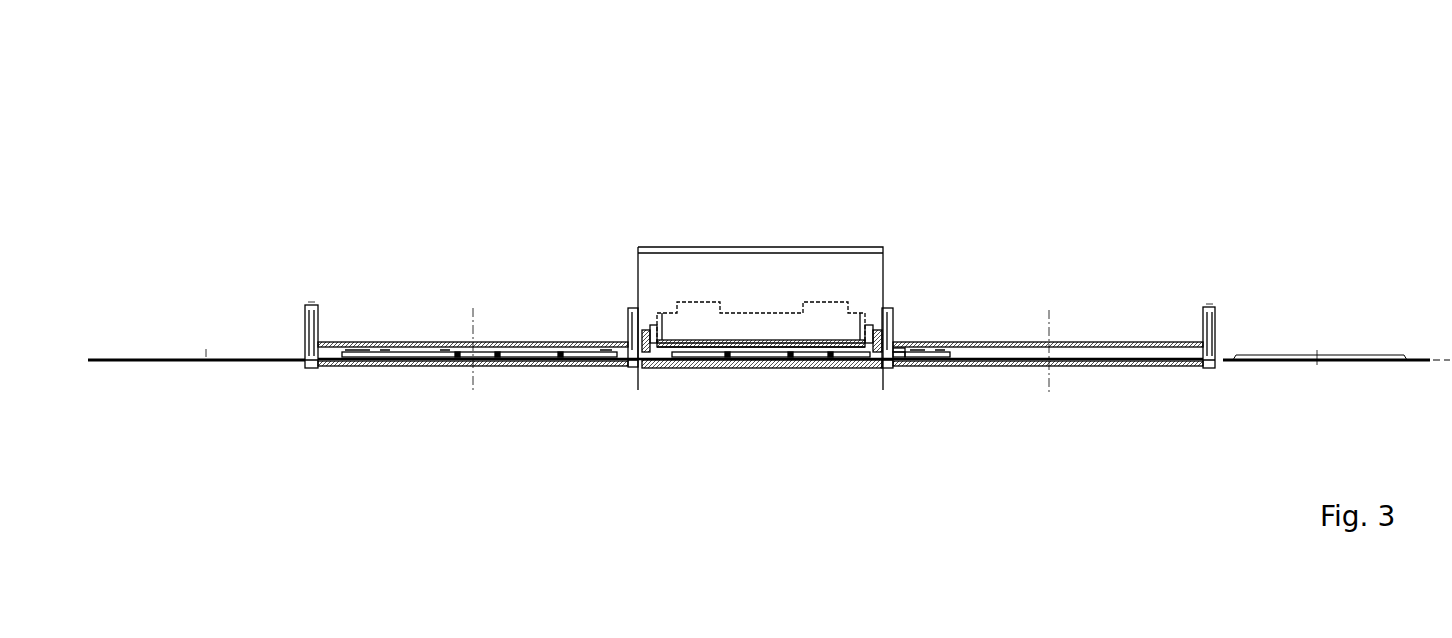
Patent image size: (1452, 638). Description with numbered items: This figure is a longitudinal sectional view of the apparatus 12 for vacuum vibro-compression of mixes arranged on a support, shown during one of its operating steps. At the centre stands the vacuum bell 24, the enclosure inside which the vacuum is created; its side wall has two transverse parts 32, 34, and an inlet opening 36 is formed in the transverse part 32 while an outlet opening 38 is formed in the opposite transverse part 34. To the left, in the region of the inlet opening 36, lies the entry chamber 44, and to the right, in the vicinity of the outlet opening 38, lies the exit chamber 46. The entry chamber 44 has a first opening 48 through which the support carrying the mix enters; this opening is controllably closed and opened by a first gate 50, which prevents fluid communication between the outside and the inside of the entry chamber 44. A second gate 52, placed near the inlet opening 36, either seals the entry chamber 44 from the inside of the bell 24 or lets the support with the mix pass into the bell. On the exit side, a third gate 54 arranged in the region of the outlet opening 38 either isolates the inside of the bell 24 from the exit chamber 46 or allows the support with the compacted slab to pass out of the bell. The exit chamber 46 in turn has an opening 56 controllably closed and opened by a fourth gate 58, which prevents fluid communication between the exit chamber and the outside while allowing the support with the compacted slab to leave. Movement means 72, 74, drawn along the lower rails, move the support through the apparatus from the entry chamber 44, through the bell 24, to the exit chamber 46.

The apparatus 12 is at (823, 216).
The vacuum bell 24 is at (885, 343).
The transverse part of the side wall 32 is at (639, 335).
The transverse part of the side wall 34 is at (897, 350).
The inlet opening 36 is at (653, 354).
The outlet opening 38 is at (899, 353).
The entry chamber 44 is at (433, 332).
The exit chamber 46 is at (1068, 330).
The first opening 48 is at (296, 357).
The first gate 50 is at (320, 308).
The second gate 52 is at (628, 308).
The third gate 54 is at (888, 306).
The opening 56 is at (1230, 347).
The fourth gate 58 is at (1216, 308).
The movement means 72 is at (361, 342).
The movement means 74 is at (953, 349).